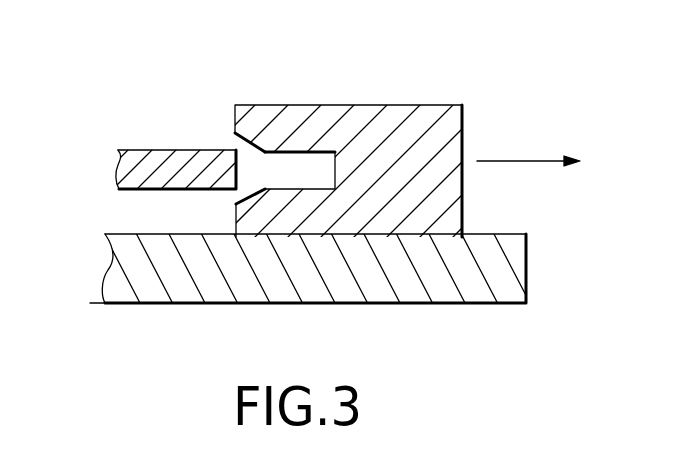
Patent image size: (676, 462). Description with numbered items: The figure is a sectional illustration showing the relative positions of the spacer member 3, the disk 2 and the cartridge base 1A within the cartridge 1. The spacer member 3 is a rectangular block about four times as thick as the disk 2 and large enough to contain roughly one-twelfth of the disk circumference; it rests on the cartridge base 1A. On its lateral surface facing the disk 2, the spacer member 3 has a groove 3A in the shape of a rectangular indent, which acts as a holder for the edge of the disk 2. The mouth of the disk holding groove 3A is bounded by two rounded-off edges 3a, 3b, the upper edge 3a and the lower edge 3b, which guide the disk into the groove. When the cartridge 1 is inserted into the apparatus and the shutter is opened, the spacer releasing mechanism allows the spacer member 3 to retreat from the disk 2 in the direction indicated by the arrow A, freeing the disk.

The cartridge 1 is at (460, 295).
The cartridge base 1A is at (502, 237).
The disk 2 is at (150, 150).
The spacer member 3 is at (354, 184).
The rounded-off edge 3a is at (234, 140).
The groove 3A is at (331, 168).
The rounded-off edge 3b is at (236, 203).
The arrow A is at (517, 161).